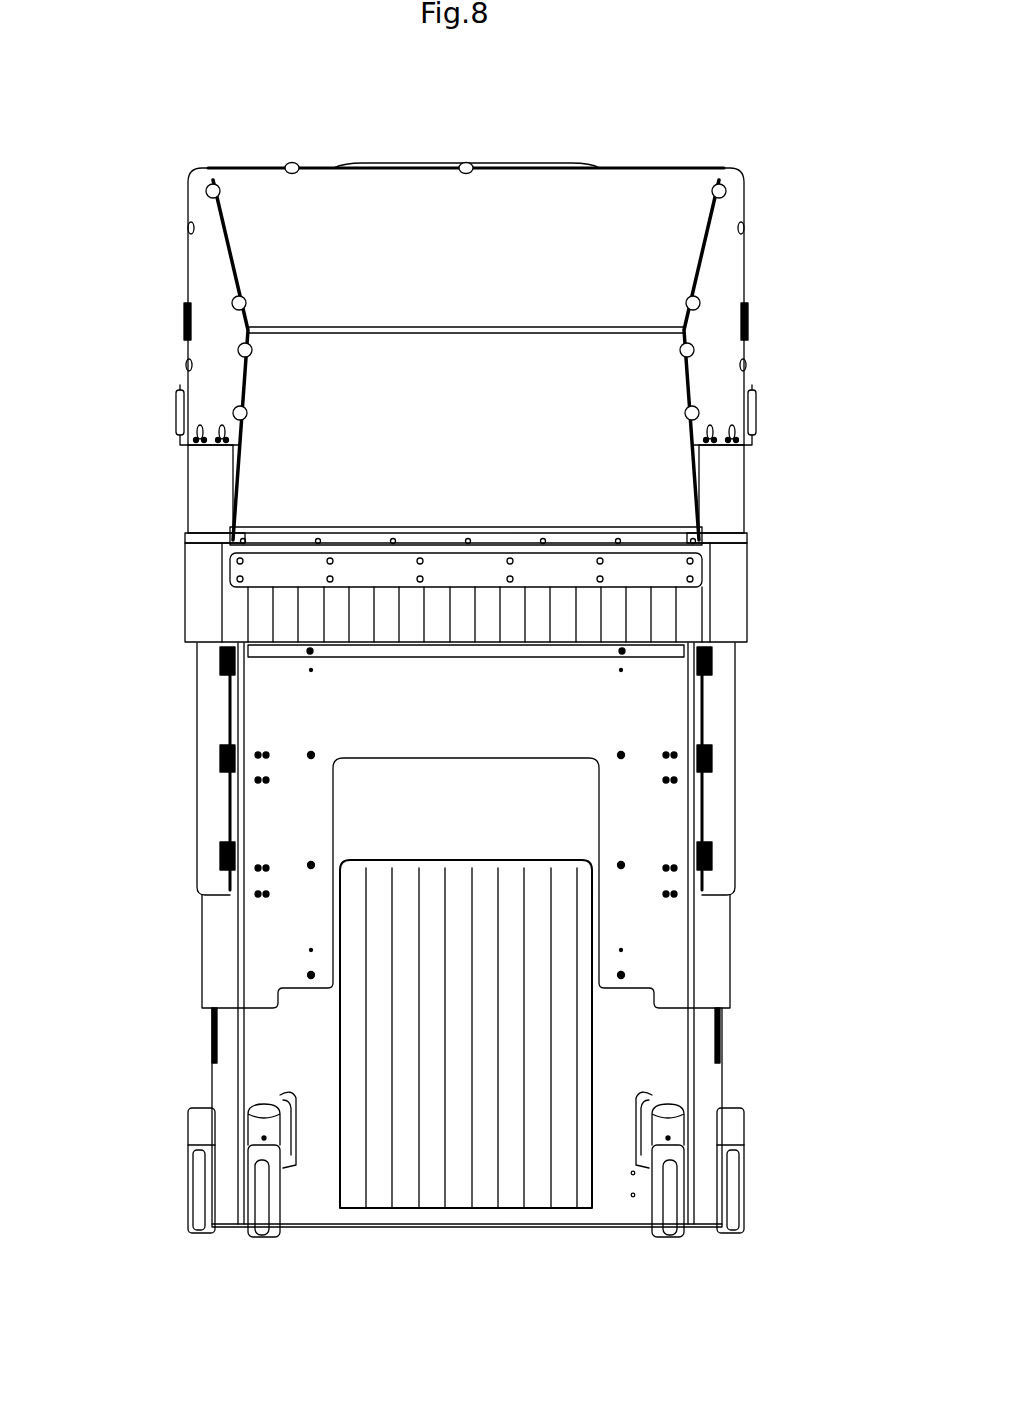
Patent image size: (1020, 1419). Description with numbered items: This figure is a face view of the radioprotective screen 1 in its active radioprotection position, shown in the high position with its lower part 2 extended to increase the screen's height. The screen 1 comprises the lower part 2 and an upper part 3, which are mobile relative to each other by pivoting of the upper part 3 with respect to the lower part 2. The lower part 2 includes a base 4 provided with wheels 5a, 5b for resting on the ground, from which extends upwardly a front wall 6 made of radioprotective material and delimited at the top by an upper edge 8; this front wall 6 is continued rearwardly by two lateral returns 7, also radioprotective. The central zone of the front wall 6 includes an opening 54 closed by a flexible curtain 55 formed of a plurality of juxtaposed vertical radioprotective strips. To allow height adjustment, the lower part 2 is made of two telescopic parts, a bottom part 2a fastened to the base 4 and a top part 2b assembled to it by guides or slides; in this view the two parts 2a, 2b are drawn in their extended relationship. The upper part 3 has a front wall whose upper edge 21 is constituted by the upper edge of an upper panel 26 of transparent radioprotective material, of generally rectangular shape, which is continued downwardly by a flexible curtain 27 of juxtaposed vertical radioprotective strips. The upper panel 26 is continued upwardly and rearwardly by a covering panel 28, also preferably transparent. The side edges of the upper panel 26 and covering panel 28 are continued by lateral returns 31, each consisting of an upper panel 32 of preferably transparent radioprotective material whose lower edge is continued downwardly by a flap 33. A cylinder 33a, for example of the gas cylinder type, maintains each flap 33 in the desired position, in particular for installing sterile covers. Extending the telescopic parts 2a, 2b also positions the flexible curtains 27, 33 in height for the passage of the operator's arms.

The radioprotective screen 1 is at (690, 105).
The lower part 2 is at (178, 958).
The bottom part 2a is at (660, 1046).
The top part 2b is at (658, 712).
The upper part 3 is at (718, 262).
The base 4 is at (178, 1210).
The wheels 5a is at (265, 1210).
The wheels 5b is at (205, 1218).
The front wall 6 is at (567, 1178).
The lateral returns 7 is at (722, 943).
The upper edge 8 is at (435, 645).
The upper edge 21 is at (548, 327).
The upper panel 26 is at (292, 473).
The flexible curtain 27 is at (542, 610).
The covering panel 28 is at (417, 197).
The lateral returns 31 is at (212, 318).
The upper panel 32 is at (200, 245).
The flap 33 is at (752, 525).
The cylinder 33a is at (172, 405).
The opening 54 is at (407, 1140).
The flexible curtain 55 is at (487, 1133).